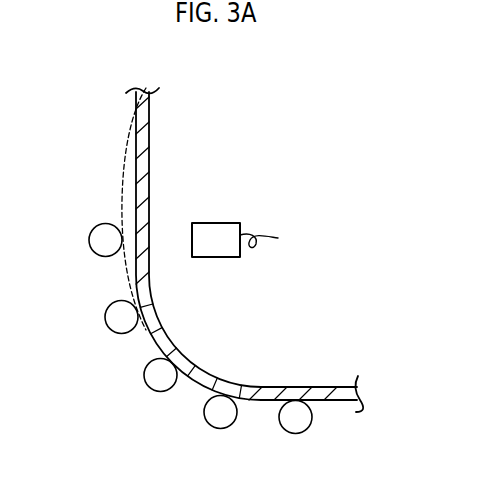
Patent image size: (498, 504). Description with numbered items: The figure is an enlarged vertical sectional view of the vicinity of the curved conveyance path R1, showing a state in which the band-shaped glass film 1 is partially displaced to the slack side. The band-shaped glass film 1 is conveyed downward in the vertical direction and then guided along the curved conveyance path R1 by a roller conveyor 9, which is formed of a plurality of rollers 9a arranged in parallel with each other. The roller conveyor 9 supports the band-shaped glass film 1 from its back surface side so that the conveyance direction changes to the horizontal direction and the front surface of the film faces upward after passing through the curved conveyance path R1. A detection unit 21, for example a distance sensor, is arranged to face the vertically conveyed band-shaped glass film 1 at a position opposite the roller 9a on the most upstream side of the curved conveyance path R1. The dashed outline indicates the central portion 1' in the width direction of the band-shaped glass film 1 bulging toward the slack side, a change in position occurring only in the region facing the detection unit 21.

The band-shaped glass film 1 is at (244, 250).
The central portion in the width direction of the band-shaped glass film 1' is at (102, 209).
The roller conveyor 9 is at (181, 344).
The roller 9a is at (112, 323).
The detection unit 21 is at (213, 257).
The curved conveyance path R1 is at (205, 368).